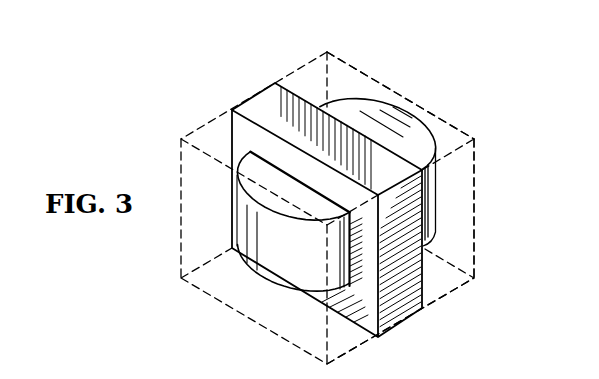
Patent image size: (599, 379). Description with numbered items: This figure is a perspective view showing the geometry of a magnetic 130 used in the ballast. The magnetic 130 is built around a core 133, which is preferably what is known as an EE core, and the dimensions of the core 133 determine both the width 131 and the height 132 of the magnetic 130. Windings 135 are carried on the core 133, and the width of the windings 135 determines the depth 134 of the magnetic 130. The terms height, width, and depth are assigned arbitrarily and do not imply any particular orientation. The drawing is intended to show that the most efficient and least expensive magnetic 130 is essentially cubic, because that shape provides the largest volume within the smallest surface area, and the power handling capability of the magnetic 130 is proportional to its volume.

The magnetic 130 is at (188, 101).
The width 131 is at (360, 71).
The height 132 is at (474, 212).
The core 133 is at (268, 94).
The depth 134 is at (443, 297).
The windings 135 is at (400, 122).